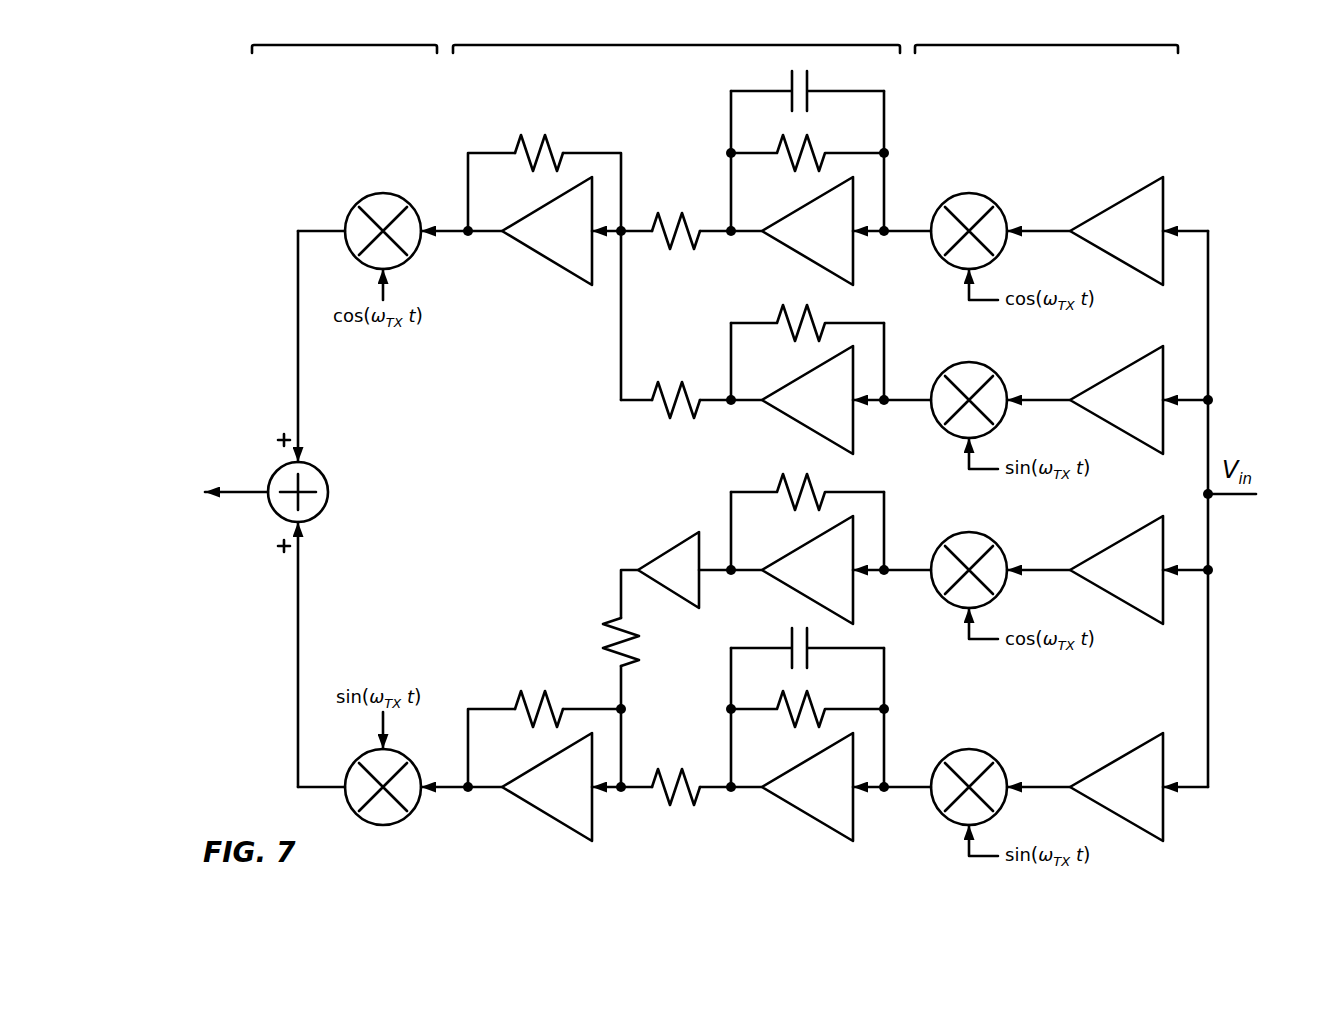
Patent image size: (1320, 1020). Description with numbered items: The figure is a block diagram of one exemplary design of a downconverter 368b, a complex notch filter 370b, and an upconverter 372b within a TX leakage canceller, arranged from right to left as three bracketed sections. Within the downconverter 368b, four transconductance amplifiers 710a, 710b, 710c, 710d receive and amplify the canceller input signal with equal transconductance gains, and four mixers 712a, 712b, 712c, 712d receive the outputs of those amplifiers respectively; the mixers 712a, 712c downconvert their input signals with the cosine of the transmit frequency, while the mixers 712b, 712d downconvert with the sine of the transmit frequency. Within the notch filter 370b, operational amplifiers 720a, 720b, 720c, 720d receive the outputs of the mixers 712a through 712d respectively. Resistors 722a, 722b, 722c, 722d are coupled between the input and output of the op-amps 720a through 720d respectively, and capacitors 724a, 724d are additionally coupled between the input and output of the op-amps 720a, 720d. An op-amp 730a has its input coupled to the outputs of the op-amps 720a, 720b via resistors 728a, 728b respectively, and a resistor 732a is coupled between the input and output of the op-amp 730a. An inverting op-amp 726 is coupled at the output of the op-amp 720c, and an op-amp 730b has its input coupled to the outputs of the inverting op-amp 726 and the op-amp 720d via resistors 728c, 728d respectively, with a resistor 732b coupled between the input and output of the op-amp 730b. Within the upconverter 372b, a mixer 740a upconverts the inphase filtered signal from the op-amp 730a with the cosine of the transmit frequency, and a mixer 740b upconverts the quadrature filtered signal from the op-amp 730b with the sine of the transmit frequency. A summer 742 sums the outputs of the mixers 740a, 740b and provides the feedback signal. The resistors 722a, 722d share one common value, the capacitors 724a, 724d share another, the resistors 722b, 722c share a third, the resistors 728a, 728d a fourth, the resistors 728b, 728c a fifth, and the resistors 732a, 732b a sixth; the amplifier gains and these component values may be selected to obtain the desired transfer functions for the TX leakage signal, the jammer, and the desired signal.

The upconverter 372b is at (344, 35).
The complex notch filter 370b is at (676, 35).
The downconverter 368b is at (1046, 35).
The transconductance amplifier 710a is at (1117, 200).
The transconductance amplifier 710b is at (1117, 369).
The transconductance amplifier 710c is at (1117, 539).
The transconductance amplifier 710d is at (1117, 756).
The mixer 712a is at (963, 193).
The mixer 712b is at (963, 362).
The mixer 712c is at (963, 532).
The mixer 712d is at (963, 749).
The operational amplifier 720a is at (813, 260).
The operational amplifier 720b is at (813, 429).
The operational amplifier 720c is at (813, 589).
The operational amplifier 720d is at (813, 816).
The resistor 722a is at (790, 166).
The resistor 722b is at (790, 336).
The resistor 722c is at (790, 505).
The resistor 722d is at (790, 722).
The capacitor 724a is at (789, 86).
The capacitor 724d is at (789, 643).
The inverting op-amp 726 is at (668, 549).
The resistor 728a is at (695, 222).
The resistor 728b is at (695, 391).
The resistor 728c is at (608, 628).
The resistor 728d is at (695, 778).
The op-amp 730a is at (552, 260).
The op-amp 730b is at (552, 816).
The resistor 732a is at (545, 144).
The resistor 732b is at (545, 700).
The mixer 740a is at (385, 180).
The mixer 740b is at (406, 760).
The summer 742 is at (330, 490).